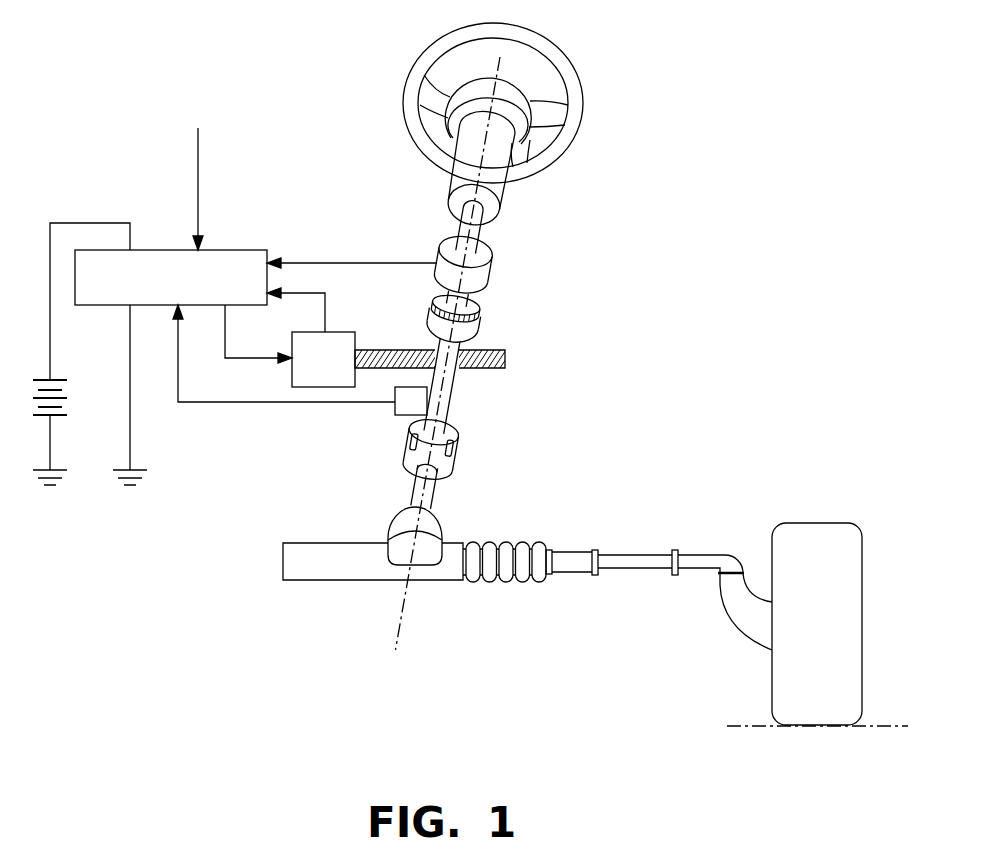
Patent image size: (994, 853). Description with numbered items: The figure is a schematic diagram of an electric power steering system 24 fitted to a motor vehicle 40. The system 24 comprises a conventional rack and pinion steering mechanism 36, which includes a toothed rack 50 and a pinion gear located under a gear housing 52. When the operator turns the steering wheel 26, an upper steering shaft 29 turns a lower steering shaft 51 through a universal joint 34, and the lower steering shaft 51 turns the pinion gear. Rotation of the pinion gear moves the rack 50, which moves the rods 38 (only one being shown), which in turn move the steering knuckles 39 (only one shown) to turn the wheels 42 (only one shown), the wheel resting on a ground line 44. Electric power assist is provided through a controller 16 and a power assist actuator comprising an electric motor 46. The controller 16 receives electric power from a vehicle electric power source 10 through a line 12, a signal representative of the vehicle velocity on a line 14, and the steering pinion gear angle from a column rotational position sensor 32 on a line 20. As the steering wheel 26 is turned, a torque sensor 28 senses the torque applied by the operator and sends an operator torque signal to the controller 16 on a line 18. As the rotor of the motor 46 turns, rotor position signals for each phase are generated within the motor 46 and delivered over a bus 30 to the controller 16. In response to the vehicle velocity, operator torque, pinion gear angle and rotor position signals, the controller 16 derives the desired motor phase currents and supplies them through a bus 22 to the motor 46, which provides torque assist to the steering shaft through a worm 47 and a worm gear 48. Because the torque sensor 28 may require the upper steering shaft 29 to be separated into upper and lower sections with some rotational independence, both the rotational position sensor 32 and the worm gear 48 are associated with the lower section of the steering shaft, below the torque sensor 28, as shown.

The vehicle electric power source 10 is at (52, 380).
The line 12 is at (70, 223).
The line 14 is at (198, 170).
The controller 16 is at (165, 257).
The line 18 is at (330, 263).
The line 20 is at (195, 403).
The bus 22 is at (242, 358).
The electric power steering system 24 is at (663, 232).
The steering wheel 26 is at (545, 53).
The torque sensor 28 is at (445, 252).
The upper steering shaft 29 is at (480, 210).
The bus 30 is at (322, 305).
The column rotational position sensor 32 is at (397, 408).
The universal joint 34 is at (452, 448).
The rack and pinion steering mechanism 36 is at (509, 590).
The rod 38 is at (630, 563).
The steering knuckle 39 is at (753, 625).
The motor vehicle 40 is at (737, 377).
The wheel 42 is at (825, 533).
The ground line 44 is at (876, 727).
The electric motor 46 is at (350, 333).
The worm 47 is at (492, 360).
The worm gear 48 is at (472, 323).
The toothed rack 50 is at (333, 572).
The lower steering shaft 51 is at (428, 503).
The gear housing 52 is at (402, 525).